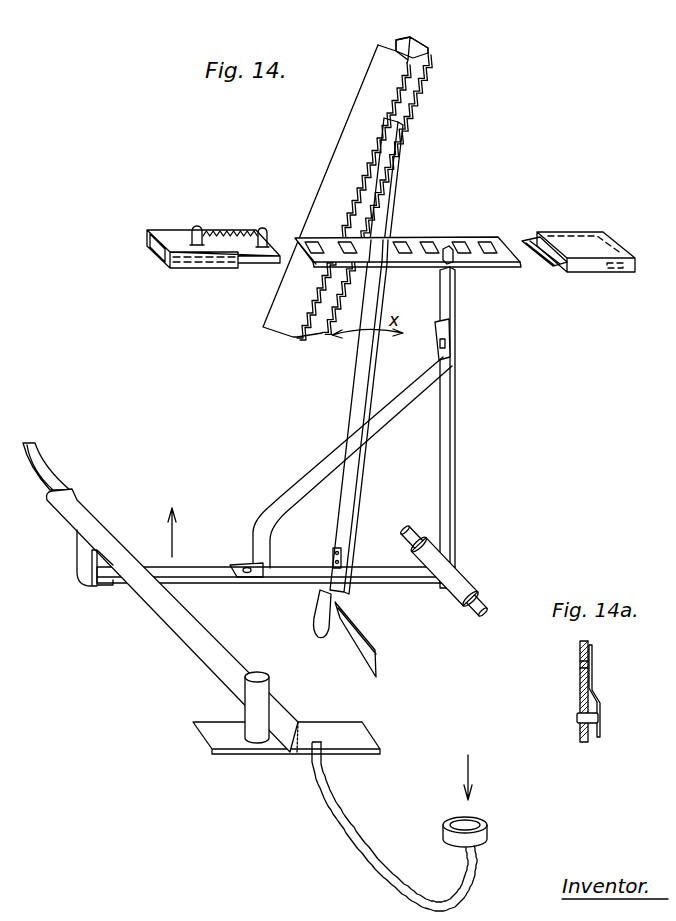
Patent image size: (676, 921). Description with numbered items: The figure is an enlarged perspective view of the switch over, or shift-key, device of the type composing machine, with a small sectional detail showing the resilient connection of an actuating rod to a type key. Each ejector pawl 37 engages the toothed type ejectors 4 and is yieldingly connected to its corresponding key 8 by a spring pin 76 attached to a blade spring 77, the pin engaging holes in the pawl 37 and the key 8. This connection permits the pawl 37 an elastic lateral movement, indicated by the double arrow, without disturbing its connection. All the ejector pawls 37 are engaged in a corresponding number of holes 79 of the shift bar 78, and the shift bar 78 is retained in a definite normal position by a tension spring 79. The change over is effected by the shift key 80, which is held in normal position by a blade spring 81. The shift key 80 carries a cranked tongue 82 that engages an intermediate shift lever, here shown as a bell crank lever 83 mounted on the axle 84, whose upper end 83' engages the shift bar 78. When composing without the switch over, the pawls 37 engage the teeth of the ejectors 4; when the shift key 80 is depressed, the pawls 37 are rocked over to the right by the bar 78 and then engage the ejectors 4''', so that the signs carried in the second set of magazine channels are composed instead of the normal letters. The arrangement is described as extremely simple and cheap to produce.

In FIG. 14, the toothed type ejector 4 is at (361, 181).
In FIG. 14, the ejector 4''' is at (427, 40).
In FIG. 14, the ejector pawl 37 is at (353, 387).
In FIG. 14, the shift bar 78 is at (472, 240).
In FIG. 14, the tension spring 79 is at (228, 245).
In FIG. 14, the bell crank lever 83 is at (307, 428).
In FIG. 14, the upper end of bell crank lever 83' is at (460, 225).
In FIG. 14, the axle 84 is at (458, 582).
In FIG. 14, the key 8 is at (367, 652).
In FIG. 14, the blade spring 77 is at (318, 600).
In FIG. 14A, the blade spring 77 is at (590, 689).
In FIG. 14A, the spring pin 76 is at (585, 694).
In FIG. 14, the blade spring 81 is at (47, 470).
In FIG. 14, the cranked tongue 82 is at (160, 598).
In FIG. 14, the shift key 80 is at (335, 795).